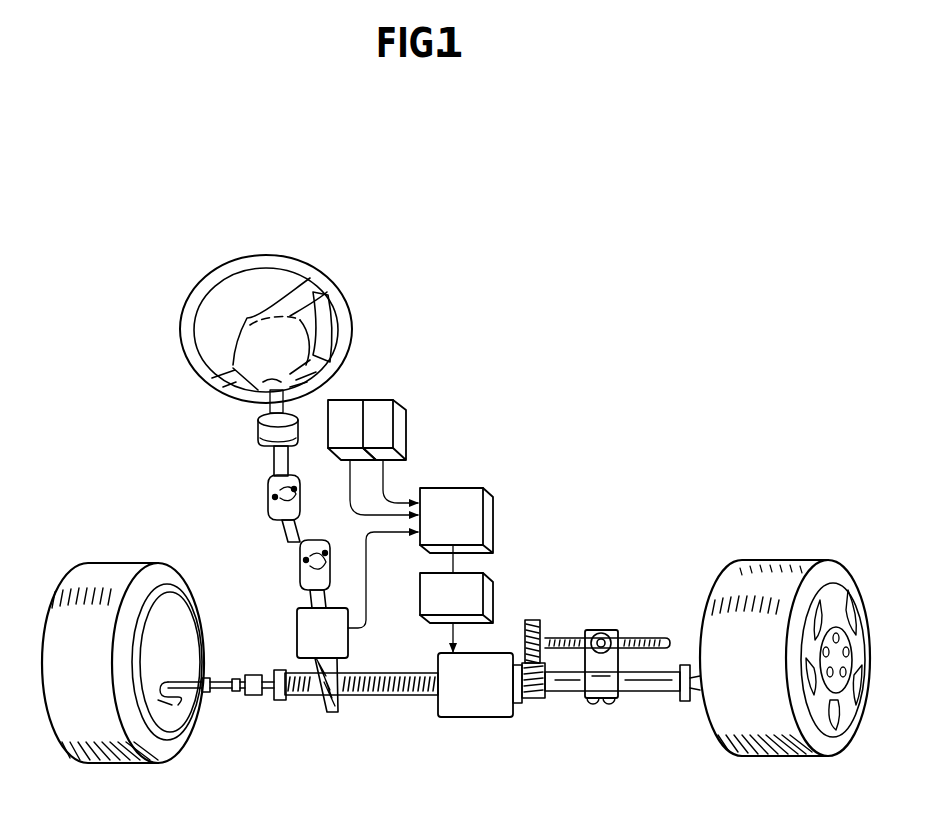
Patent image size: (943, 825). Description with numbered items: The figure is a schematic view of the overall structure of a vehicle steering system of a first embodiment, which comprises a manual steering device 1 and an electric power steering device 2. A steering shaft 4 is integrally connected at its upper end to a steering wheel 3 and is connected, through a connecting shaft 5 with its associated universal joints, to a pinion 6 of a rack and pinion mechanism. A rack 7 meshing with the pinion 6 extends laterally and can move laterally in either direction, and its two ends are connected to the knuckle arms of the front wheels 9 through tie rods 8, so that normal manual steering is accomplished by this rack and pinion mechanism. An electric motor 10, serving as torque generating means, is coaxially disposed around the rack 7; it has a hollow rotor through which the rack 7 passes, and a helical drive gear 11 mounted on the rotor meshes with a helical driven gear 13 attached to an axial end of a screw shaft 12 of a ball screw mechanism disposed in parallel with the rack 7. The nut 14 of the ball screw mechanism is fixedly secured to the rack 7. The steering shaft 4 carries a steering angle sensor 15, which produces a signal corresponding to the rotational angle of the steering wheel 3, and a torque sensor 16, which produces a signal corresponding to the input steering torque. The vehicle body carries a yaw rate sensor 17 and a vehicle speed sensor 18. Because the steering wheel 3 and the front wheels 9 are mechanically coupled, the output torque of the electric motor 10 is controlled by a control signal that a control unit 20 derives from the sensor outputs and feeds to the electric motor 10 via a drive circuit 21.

The manual steering device 1 is at (332, 671).
The electric power steering device 2 is at (619, 621).
The steering wheel 3 is at (350, 312).
The steering shaft 4 is at (275, 458).
The connecting shaft 5 is at (300, 536).
The pinion 6 is at (322, 702).
The rack 7 is at (392, 698).
The tie rods 8 is at (214, 693).
The front wheels 9 is at (110, 565).
The electric motor 10 is at (470, 718).
The helical drive gear 11 is at (536, 700).
The screw shaft 12 is at (655, 640).
The helical driven gear 13 is at (537, 620).
The nut 14 is at (593, 630).
The steering angle sensor 15 is at (262, 432).
The torque sensor 16 is at (350, 640).
The yaw rate sensor 17 is at (348, 398).
The vehicle speed sensor 18 is at (390, 398).
The control unit 20 is at (498, 515).
The drive circuit 21 is at (496, 586).